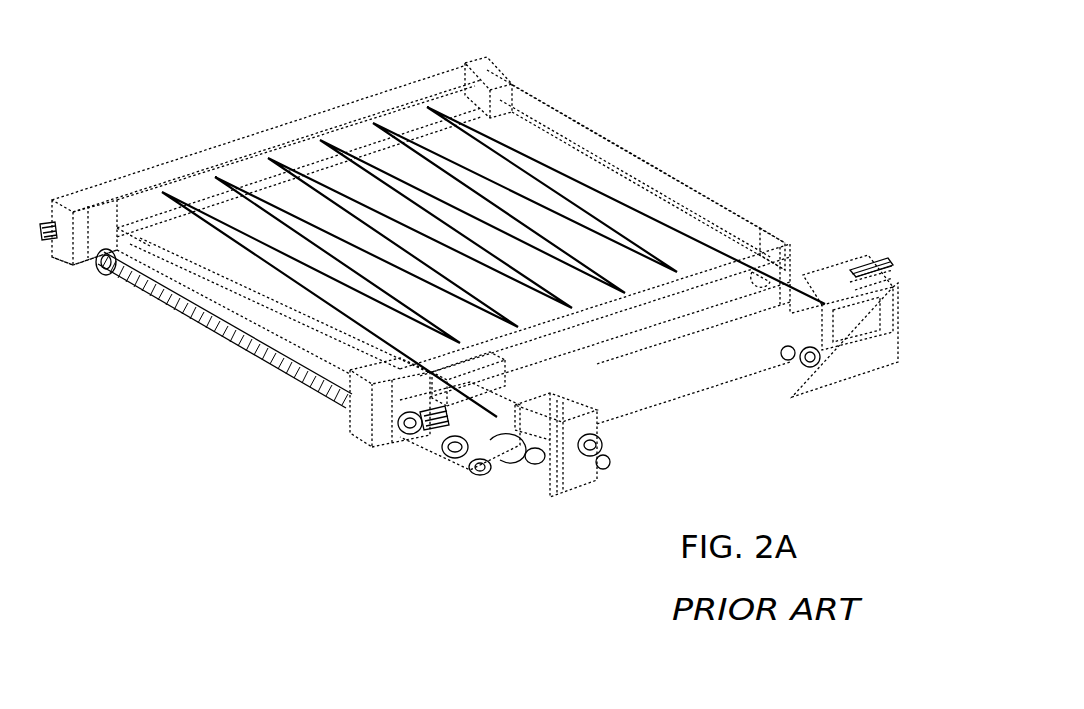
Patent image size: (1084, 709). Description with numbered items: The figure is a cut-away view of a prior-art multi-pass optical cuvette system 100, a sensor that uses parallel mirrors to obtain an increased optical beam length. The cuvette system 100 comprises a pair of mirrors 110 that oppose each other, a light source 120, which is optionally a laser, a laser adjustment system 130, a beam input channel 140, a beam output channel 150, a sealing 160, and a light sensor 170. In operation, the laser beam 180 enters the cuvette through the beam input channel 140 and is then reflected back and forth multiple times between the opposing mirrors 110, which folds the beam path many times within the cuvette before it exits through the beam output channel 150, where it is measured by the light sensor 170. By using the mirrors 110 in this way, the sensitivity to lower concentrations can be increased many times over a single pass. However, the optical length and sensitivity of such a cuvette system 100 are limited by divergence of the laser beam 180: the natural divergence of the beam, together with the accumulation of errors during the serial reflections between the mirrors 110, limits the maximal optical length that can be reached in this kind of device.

The multi-pass optical cuvette system 100 is at (682, 92).
The pair of mirrors 110 is at (408, 108).
The light source 120 is at (482, 423).
The laser adjustment system 130 is at (563, 488).
The beam input channel 140 is at (432, 385).
The beam output channel 150 is at (762, 278).
The sealing 160 is at (487, 70).
The light sensor 170 is at (897, 278).
The laser beam 180 is at (647, 217).